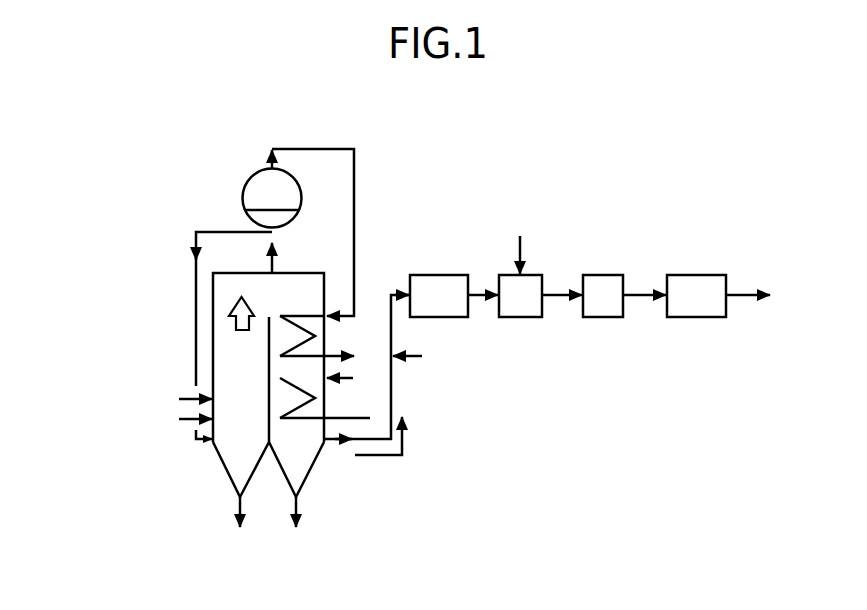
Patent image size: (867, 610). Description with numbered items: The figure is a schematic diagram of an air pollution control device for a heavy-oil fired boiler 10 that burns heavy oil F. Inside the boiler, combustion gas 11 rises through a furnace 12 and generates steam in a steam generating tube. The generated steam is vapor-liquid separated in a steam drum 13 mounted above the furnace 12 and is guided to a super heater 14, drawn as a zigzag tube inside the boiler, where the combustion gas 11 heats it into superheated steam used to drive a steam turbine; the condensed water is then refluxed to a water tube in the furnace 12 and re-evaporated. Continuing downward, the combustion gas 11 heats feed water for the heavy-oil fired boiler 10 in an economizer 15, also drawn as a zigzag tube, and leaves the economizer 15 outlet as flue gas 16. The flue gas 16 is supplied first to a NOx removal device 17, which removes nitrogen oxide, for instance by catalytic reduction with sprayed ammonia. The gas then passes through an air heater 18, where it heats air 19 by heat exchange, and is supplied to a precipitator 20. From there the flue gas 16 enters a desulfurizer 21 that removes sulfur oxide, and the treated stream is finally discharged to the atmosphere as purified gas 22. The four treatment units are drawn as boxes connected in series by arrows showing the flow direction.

The heavy-oil fired boiler 10 is at (203, 479).
The combustion gas 11 is at (231, 307).
The furnace 12 is at (213, 356).
The steam drum 13 is at (256, 173).
The super heater 14 is at (297, 301).
The economizer 15 is at (294, 434).
The flue gas 16 is at (383, 457).
The NOx removal device 17 is at (423, 274).
The air heater 18 is at (515, 318).
The air 19 is at (521, 250).
The precipitator 20 is at (598, 318).
The desulfurizer 21 is at (688, 318).
The purified gas 22 is at (742, 294).